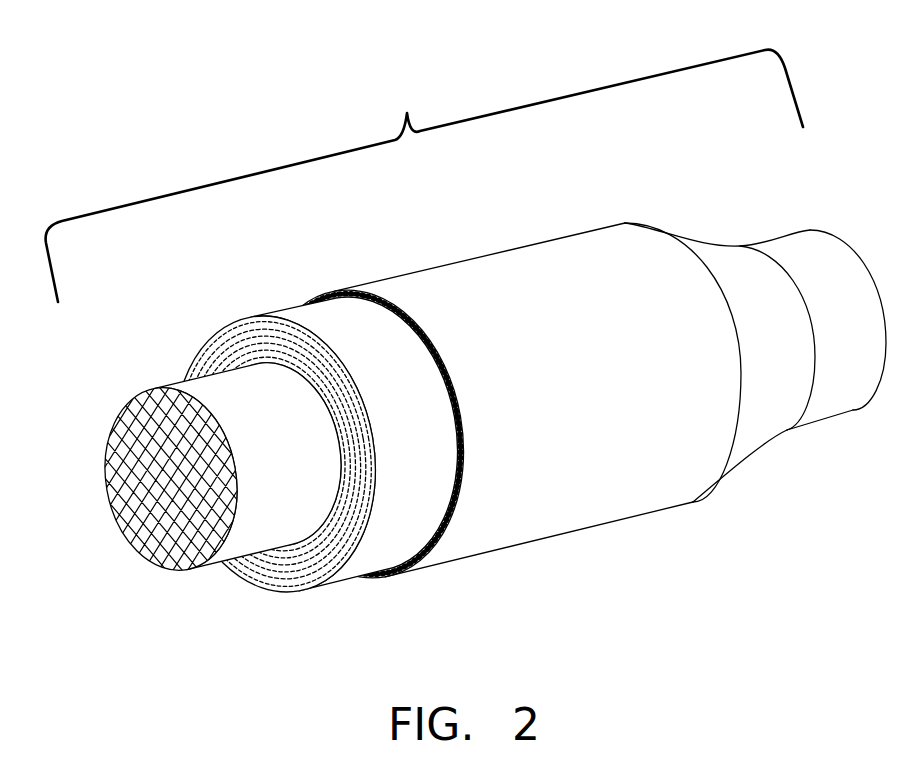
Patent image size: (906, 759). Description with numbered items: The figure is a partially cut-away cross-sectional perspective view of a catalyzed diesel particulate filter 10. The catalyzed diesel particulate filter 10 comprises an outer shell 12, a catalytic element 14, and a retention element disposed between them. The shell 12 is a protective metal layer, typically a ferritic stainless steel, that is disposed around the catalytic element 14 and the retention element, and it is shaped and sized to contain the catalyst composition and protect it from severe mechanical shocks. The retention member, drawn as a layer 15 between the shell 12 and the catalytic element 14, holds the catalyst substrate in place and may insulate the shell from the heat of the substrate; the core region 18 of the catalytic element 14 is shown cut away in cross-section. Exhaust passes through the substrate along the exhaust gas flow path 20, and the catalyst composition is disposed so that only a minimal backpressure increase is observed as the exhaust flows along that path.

The catalyzed diesel particulate filter 10 is at (450, 423).
The outer shell 12 is at (560, 535).
The catalytic element 14 is at (180, 566).
The braided shield 15 is at (350, 573).
The conductor 18 is at (173, 522).
The exhaust gas flow path 20 is at (424, 176).